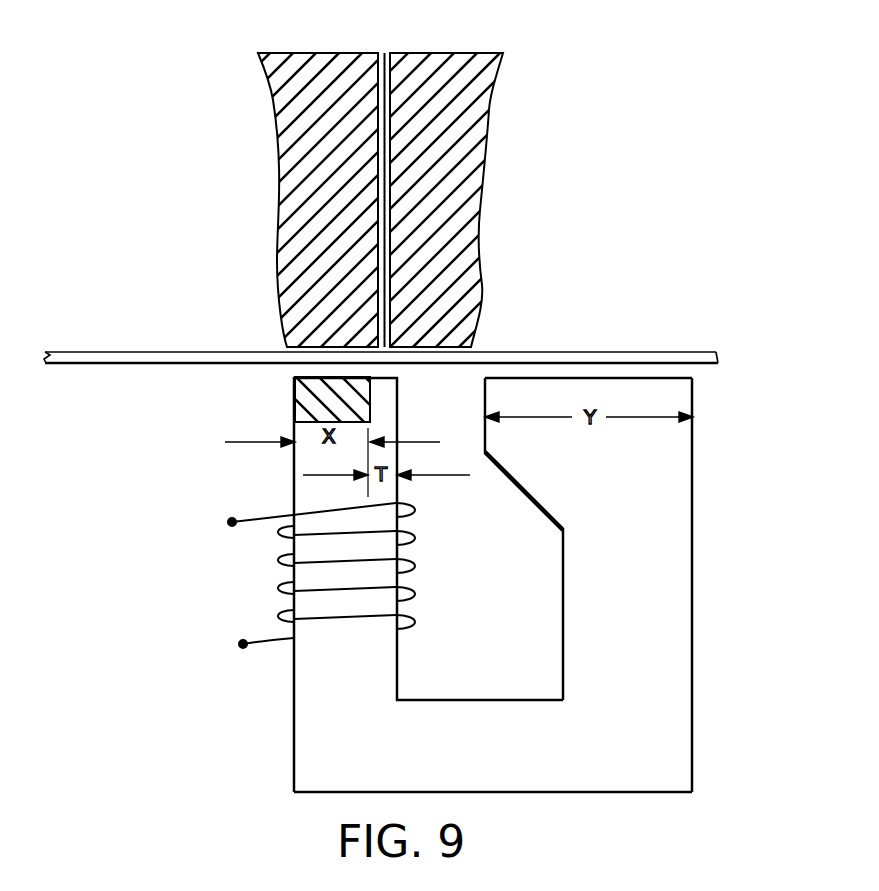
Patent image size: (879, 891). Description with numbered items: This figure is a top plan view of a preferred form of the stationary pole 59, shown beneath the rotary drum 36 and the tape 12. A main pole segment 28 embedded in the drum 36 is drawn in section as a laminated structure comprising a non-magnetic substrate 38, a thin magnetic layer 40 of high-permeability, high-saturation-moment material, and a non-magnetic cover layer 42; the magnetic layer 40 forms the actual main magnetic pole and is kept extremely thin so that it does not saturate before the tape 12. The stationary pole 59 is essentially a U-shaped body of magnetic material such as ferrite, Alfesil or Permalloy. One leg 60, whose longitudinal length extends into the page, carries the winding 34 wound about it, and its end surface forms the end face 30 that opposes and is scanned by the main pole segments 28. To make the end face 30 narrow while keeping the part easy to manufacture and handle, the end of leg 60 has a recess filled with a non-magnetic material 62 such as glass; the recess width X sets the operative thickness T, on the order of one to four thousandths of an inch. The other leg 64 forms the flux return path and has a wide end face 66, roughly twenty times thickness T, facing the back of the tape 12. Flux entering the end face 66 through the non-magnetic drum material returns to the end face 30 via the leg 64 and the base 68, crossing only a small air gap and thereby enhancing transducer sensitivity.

The tape 12 is at (688, 352).
The main pole segment 28 is at (364, 231).
The end face 30 is at (390, 376).
The winding 34 is at (252, 638).
The drum 36 is at (399, 176).
The non-magnetic substrate 38 is at (390, 107).
The magnetic layer 40 is at (385, 53).
The non-magnetic cover layer 42 is at (378, 110).
The stationary pole 59 is at (539, 571).
The leg 60 is at (308, 518).
The non-magnetic material 62 is at (300, 400).
The leg 64 is at (667, 599).
The end face 66 is at (550, 378).
The base 68 is at (475, 775).